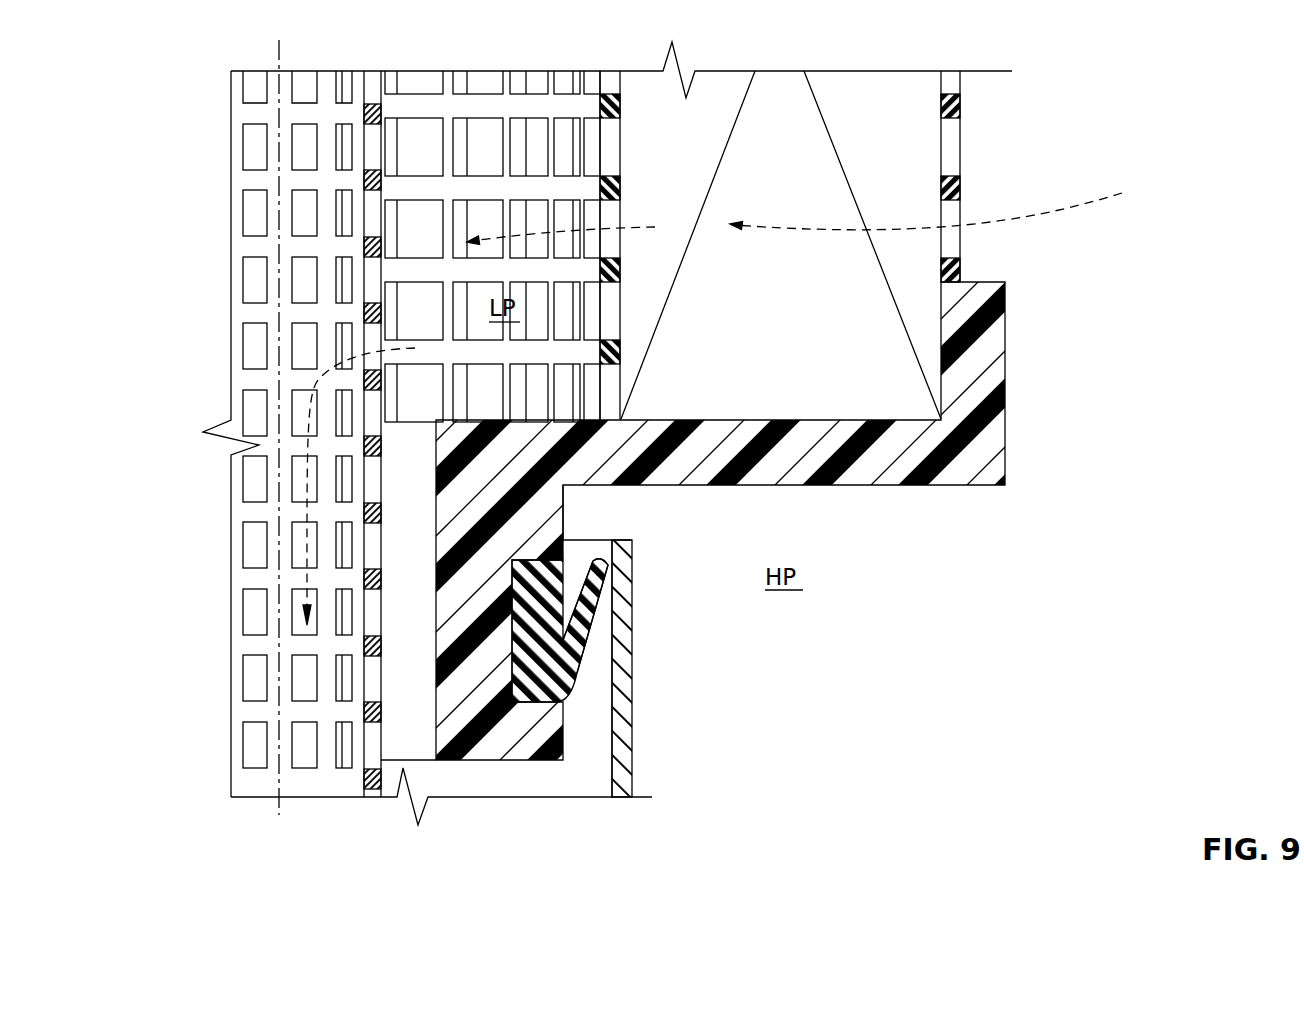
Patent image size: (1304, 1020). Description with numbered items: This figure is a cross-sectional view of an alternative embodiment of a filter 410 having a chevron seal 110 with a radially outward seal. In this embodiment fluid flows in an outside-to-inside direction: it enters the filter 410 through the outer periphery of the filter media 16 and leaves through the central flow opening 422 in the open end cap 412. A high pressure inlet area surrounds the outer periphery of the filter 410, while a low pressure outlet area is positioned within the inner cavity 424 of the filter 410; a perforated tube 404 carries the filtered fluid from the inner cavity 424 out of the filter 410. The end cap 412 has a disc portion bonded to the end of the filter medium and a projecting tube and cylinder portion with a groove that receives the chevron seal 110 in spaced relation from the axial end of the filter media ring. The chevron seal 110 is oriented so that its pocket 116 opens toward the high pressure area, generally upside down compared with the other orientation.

The filter 410 is at (1058, 101).
The open end cap 412 is at (968, 478).
The perforated tube 404 is at (370, 779).
The central flow opening 422 is at (433, 737).
The inner cavity 424 is at (513, 158).
The filter media 16 is at (769, 168).
The pocket 116 is at (575, 560).
The chevron seal 110 is at (578, 673).